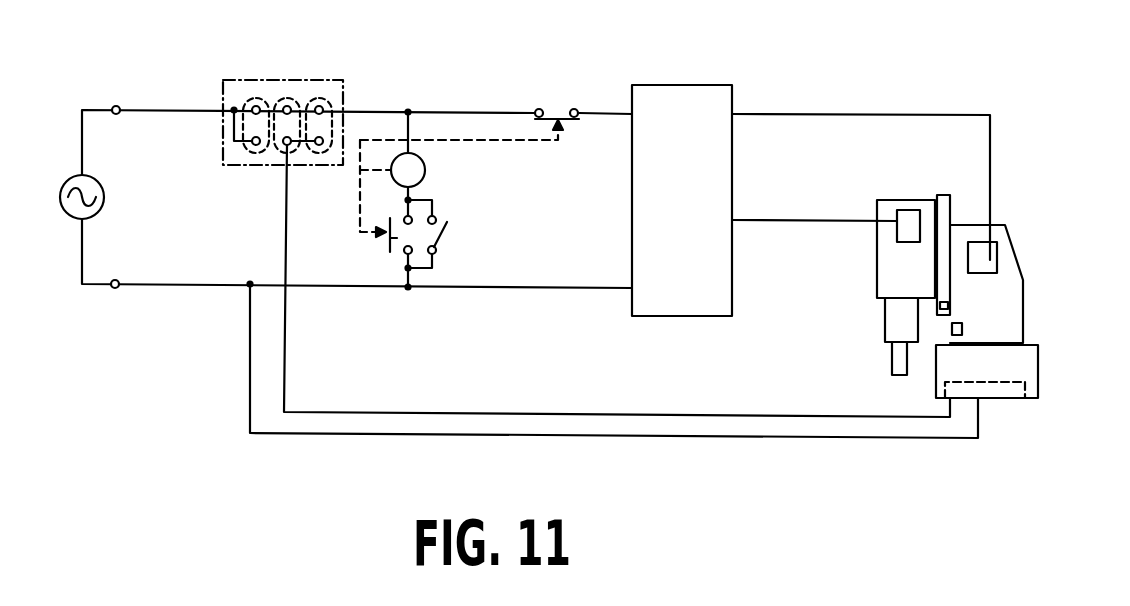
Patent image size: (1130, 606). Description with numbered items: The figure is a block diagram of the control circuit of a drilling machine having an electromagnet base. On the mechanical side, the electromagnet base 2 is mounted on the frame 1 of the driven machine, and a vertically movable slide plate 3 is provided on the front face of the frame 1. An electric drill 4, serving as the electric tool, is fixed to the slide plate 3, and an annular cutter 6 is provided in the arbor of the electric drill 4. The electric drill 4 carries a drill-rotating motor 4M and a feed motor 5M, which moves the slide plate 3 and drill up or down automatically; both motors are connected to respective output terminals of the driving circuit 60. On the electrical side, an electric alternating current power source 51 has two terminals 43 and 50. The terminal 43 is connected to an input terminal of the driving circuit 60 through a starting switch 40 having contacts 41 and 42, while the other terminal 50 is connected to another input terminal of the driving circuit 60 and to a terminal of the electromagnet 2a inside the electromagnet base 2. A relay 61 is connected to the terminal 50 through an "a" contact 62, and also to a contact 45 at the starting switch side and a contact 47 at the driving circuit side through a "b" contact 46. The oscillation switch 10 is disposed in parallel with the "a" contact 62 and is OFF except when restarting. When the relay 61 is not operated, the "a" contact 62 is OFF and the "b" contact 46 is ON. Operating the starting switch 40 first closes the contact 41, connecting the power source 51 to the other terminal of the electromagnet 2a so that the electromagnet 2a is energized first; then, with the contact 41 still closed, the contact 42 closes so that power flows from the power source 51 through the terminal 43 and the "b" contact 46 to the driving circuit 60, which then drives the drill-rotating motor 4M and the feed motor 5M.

The frame 1 is at (1021, 263).
The electromagnet base 2 is at (1040, 368).
The electromagnet 2a is at (1006, 400).
The slide plate 3 is at (952, 210).
The electric drill 4 is at (885, 263).
The drill-rotating motor 4M is at (906, 214).
The feed motor 5M is at (991, 262).
The annular cutter 6 is at (893, 366).
The oscillation switch 10 is at (447, 232).
The starting switch 40 is at (222, 93).
The contact 41 is at (285, 97).
The contact 42 is at (320, 96).
The terminal 43 is at (116, 106).
The contact 45 is at (539, 108).
The "b" contact 46 is at (556, 116).
The contact 47 is at (577, 109).
The terminal 50 is at (115, 289).
The electric alternating current power source 51 is at (104, 196).
The driving circuit 60 is at (700, 92).
The relay 61 is at (425, 170).
The "a" contact 62 is at (389, 244).